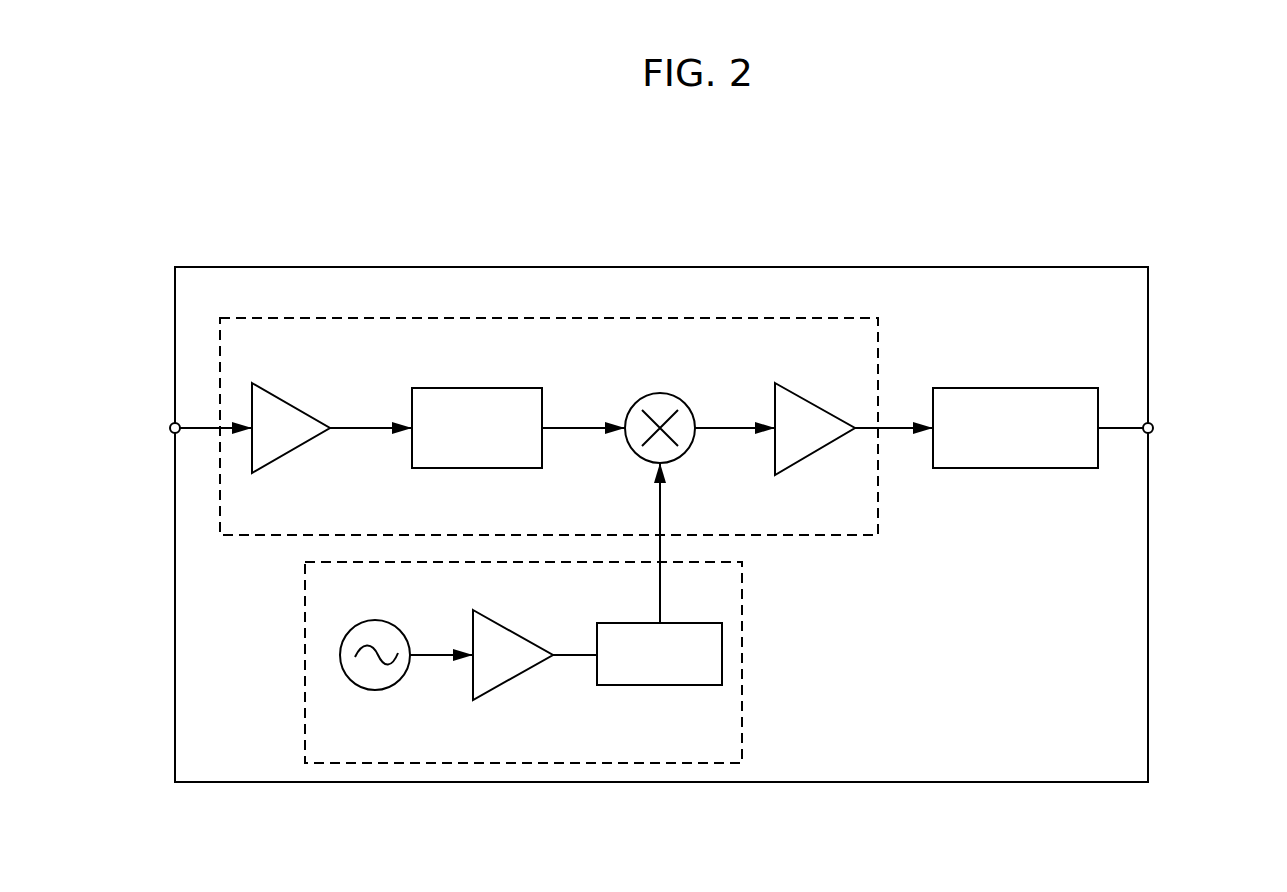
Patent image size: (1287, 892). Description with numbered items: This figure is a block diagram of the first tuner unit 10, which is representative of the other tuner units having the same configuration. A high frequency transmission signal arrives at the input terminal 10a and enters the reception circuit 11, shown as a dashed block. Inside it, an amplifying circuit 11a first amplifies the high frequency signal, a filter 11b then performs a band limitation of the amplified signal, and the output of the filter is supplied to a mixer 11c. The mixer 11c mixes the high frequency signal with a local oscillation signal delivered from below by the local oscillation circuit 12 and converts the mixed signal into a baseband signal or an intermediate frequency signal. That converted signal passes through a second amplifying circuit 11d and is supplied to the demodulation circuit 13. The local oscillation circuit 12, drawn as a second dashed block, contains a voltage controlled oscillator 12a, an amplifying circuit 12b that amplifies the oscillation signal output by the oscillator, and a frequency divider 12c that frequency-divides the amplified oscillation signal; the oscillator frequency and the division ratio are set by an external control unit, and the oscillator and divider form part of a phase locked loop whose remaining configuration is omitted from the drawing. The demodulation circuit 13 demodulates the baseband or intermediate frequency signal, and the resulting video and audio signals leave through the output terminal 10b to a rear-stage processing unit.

The first tuner unit 10 is at (636, 266).
The input terminal 10a is at (168, 428).
The output terminal 10b is at (1154, 428).
The reception circuit 11 is at (841, 538).
The amplifying circuit 11a is at (286, 400).
The filter 11b is at (472, 388).
The mixer 11c is at (657, 394).
The amplifying circuit 11d is at (810, 402).
The local oscillation circuit 12 is at (304, 590).
The voltage controlled oscillator 12a is at (378, 691).
The amplifying circuit 12b is at (517, 676).
The frequency divider 12c is at (662, 686).
The demodulation circuit 13 is at (1016, 469).